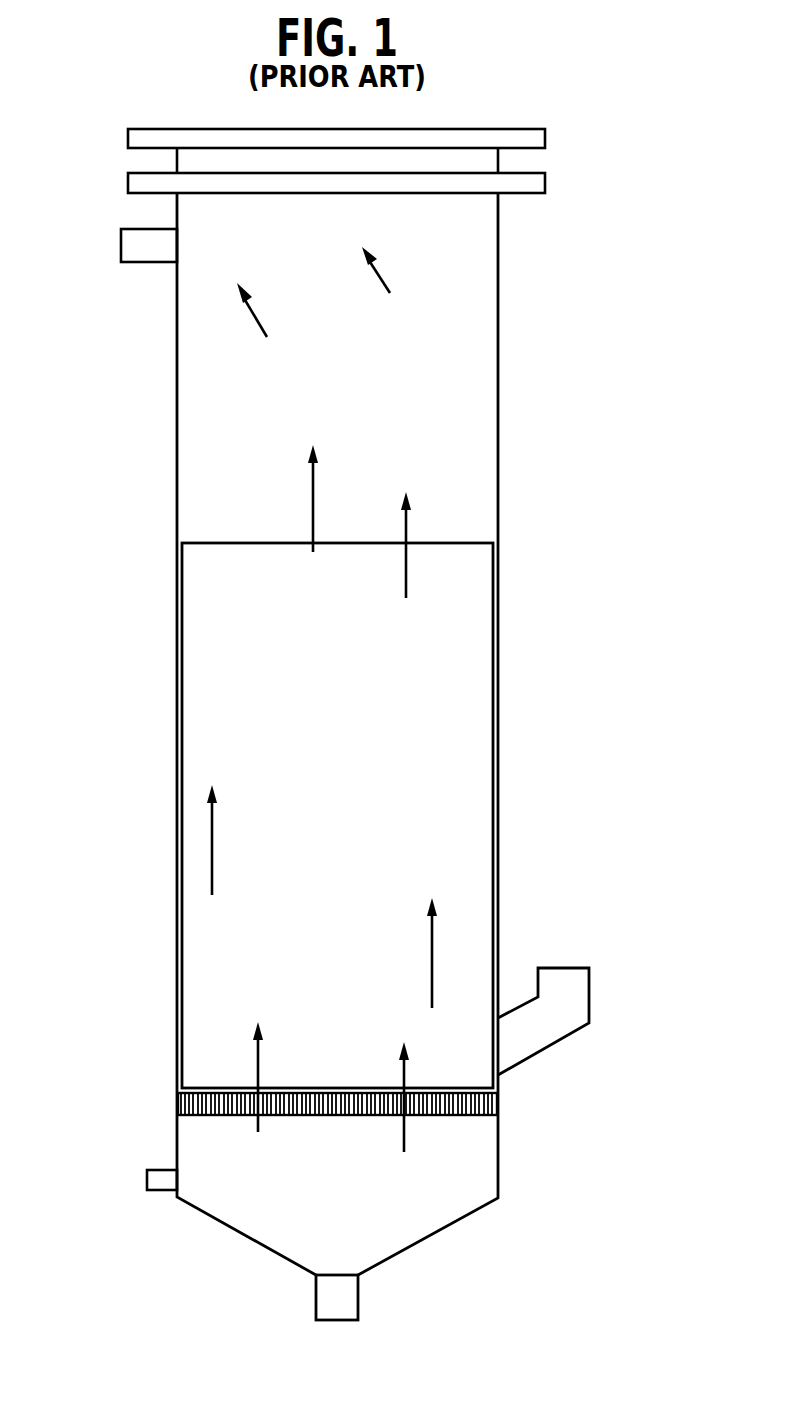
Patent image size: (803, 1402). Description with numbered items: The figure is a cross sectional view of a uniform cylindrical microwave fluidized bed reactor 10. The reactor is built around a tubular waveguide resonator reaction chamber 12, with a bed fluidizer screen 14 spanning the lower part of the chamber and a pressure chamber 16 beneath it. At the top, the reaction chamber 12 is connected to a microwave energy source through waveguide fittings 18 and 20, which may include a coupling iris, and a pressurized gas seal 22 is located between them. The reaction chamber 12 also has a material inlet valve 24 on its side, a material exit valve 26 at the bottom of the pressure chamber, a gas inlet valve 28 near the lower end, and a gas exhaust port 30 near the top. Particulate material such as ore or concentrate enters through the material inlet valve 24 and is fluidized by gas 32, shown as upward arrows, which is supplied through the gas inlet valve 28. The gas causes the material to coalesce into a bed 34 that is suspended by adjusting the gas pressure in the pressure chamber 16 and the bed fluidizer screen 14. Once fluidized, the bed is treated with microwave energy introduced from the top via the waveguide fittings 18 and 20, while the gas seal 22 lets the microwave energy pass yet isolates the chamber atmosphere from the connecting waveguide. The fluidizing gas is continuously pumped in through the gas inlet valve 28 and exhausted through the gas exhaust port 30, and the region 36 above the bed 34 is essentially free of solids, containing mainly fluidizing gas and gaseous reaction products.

The uniform cylindrical microwave fluidized bed reactor 10 is at (603, 760).
The tubular waveguide resonator reaction chamber 12 is at (176, 410).
The bed fluidizer screen 14 is at (187, 1105).
The pressure chamber 16 is at (193, 1160).
The waveguide fitting 18 is at (546, 134).
The waveguide fitting 20 is at (546, 186).
The pressurized gas seal 22 is at (498, 162).
The material inlet valve 24 is at (565, 967).
The material exit valve 26 is at (358, 1297).
The gas inlet valve 28 is at (146, 1178).
The gas exhaust port 30 is at (120, 244).
The gas 32 is at (258, 1062).
The bed 34 is at (226, 675).
The region 36 is at (470, 395).